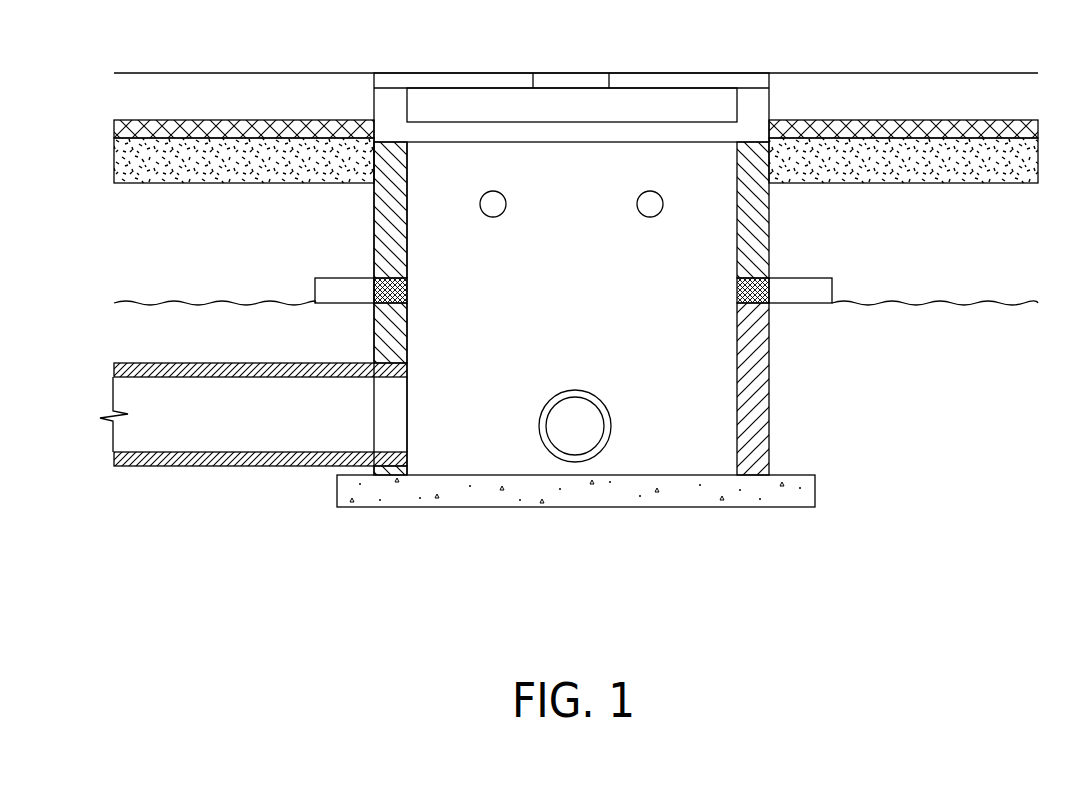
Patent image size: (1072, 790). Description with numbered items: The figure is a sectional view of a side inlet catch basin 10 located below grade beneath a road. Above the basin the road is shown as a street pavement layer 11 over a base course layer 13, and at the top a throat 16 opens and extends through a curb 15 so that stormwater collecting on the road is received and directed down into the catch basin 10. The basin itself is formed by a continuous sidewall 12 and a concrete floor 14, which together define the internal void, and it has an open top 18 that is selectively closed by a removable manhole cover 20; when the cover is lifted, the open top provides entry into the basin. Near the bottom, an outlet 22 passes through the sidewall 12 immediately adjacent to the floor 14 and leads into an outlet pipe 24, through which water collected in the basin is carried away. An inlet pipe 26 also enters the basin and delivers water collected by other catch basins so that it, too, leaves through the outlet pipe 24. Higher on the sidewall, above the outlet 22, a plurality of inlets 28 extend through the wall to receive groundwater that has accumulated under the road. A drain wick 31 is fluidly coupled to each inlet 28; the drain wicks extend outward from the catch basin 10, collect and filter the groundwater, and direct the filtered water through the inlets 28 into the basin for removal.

The side inlet catch basin 10 is at (254, 562).
The street pavement layer 11 is at (160, 121).
The continuous sidewall 12 is at (388, 207).
The base course layer 13 is at (244, 152).
The concrete floor 14 is at (815, 492).
The curb 15 is at (915, 92).
The throat 16 is at (725, 105).
The open top 18 is at (608, 79).
The removable manhole cover 20 is at (548, 77).
The outlet 22 is at (400, 432).
The outlet pipe 24 is at (143, 468).
The inlet pipe 26 is at (608, 427).
The inlets 28 is at (495, 190).
The drain wick 31 is at (343, 278).